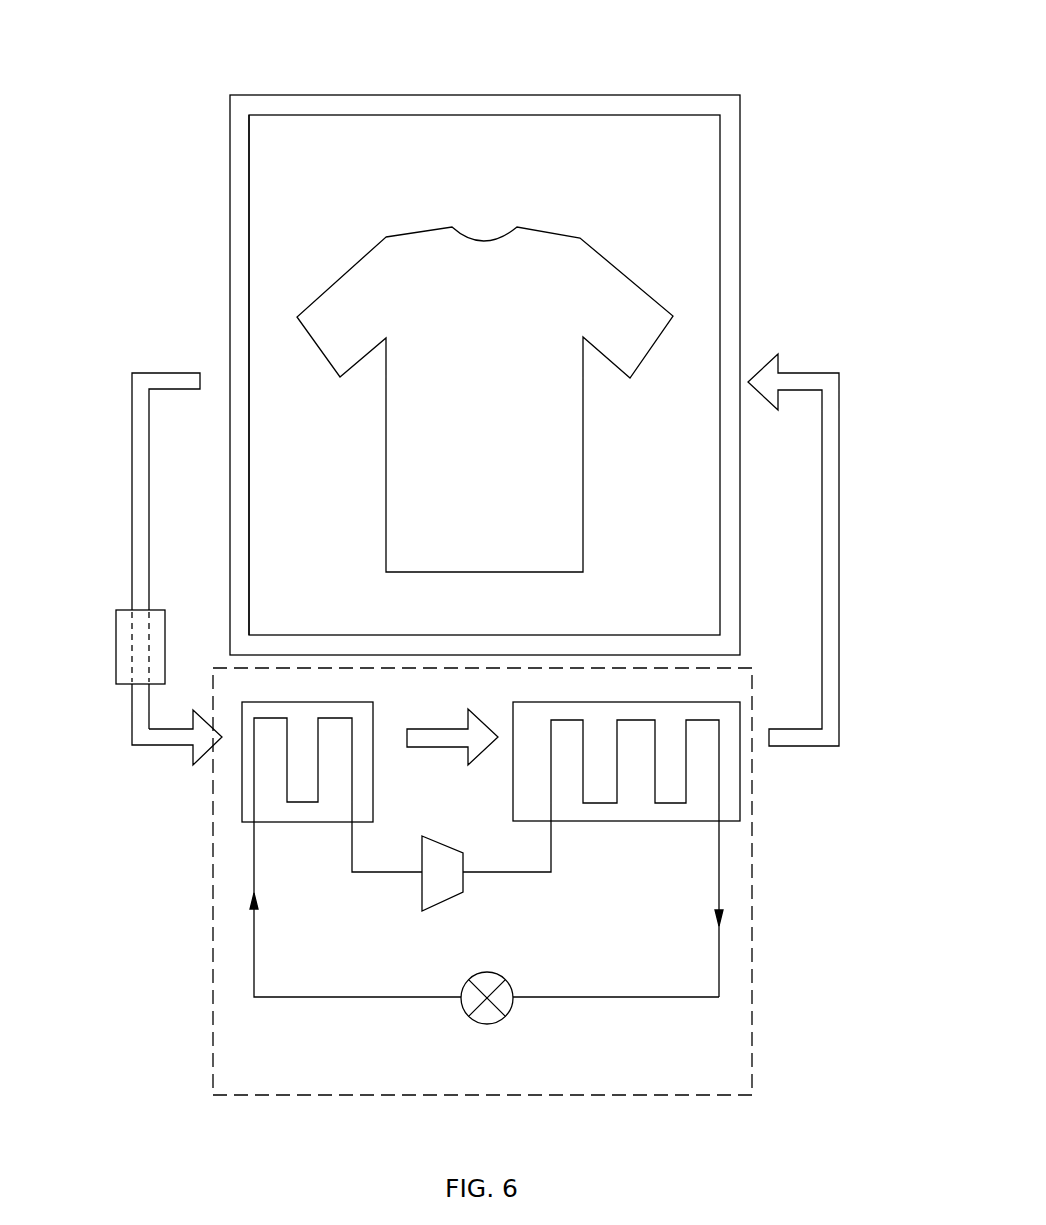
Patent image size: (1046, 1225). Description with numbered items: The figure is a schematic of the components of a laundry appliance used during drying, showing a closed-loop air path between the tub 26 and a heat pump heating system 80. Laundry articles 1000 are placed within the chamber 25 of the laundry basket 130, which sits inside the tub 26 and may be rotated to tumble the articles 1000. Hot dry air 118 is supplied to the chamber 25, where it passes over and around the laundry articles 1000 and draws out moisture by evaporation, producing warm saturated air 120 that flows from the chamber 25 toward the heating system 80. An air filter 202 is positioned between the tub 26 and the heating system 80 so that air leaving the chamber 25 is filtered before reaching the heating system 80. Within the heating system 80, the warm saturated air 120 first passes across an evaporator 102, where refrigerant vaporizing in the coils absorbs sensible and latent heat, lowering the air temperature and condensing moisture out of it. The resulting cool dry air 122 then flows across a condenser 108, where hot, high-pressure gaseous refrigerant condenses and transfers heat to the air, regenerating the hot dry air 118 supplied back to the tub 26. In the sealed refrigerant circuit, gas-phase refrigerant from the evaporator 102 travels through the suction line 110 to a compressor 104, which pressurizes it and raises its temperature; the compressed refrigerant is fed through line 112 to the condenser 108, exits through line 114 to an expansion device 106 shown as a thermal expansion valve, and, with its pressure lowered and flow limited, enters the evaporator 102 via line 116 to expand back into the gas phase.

The tub 26 is at (690, 95).
The chamber 25 is at (630, 157).
The laundry basket 130 is at (248, 260).
The laundry articles 1000 is at (386, 277).
The warm saturated air 120 is at (137, 517).
The air filter 202 is at (115, 652).
The hot dry air 118 is at (830, 562).
The heating system 80 is at (657, 1096).
The cool dry air 122 is at (450, 740).
The evaporator 102 is at (240, 808).
The condenser 108 is at (728, 797).
The suction line 110 is at (387, 872).
The compressor 104 is at (445, 900).
The line 112 is at (551, 846).
The line 114 is at (720, 978).
The line 116 is at (403, 997).
The expansion device 106 is at (497, 1020).